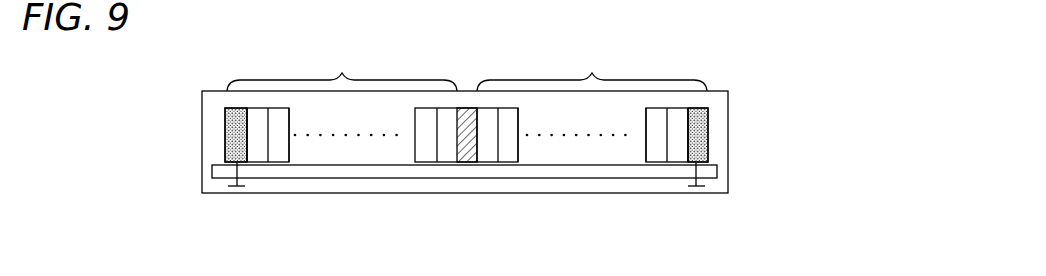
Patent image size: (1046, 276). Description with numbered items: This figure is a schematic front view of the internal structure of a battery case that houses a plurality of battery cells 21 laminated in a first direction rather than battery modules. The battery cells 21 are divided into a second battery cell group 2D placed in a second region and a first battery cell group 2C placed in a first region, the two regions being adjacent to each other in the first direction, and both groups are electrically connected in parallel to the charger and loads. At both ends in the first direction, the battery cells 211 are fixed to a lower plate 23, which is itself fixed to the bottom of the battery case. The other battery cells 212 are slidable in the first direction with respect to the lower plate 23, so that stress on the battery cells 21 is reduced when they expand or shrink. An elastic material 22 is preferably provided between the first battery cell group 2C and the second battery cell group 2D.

The battery cells 21 is at (225, 133).
The battery cells at both ends 211 is at (240, 153).
The other battery cells 212 is at (258, 150).
The elastic material 22 is at (467, 163).
The lower plate 23 is at (440, 180).
The second battery cell group 2D is at (342, 69).
The first battery cell group 2C is at (592, 69).